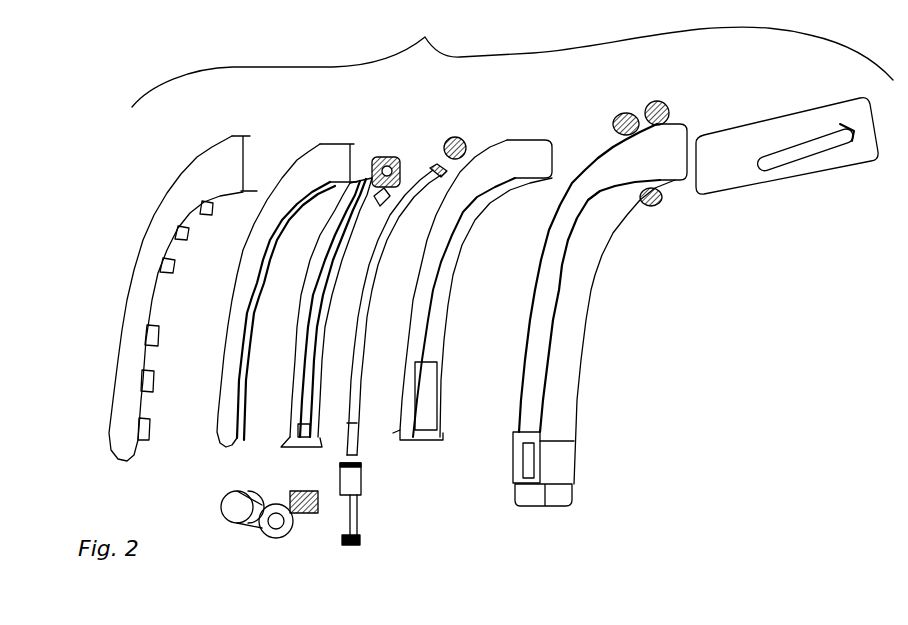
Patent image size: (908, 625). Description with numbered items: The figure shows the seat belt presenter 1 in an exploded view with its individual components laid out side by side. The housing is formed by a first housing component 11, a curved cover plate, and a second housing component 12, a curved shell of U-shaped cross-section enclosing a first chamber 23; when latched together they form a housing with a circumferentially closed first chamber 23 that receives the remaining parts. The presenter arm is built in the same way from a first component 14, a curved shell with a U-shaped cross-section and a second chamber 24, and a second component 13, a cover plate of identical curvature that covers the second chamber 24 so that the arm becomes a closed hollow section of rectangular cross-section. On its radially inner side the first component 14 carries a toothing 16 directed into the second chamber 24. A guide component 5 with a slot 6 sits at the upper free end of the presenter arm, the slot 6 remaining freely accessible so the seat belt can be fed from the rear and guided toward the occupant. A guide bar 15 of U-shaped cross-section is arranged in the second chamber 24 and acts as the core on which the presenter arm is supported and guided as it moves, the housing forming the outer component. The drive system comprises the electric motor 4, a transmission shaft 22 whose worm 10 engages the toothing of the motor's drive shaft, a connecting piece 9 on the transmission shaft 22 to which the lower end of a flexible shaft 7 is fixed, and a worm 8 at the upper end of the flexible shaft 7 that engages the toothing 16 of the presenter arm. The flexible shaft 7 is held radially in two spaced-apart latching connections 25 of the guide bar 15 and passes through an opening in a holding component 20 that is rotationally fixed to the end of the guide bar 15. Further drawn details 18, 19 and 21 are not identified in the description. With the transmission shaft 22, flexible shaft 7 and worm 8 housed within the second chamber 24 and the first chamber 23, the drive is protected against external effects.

The seat belt presenter 1 is at (512, 60).
The electric motor 4 is at (250, 520).
The guide component 5 is at (810, 168).
The slot 6 is at (847, 123).
The flexible shaft 7 is at (357, 317).
The worm 8 is at (446, 143).
The connecting piece 9 is at (353, 480).
The worm 10 is at (353, 538).
The first housing component 11 is at (150, 257).
The second housing component 12 is at (580, 287).
The second component 13 is at (236, 310).
The first component 14 is at (453, 277).
The guide bar 15 is at (305, 360).
The toothing 16 is at (517, 170).
The projection 18 is at (622, 112).
The projection 19 is at (660, 100).
The holding component 20 is at (388, 166).
The pin 21 is at (383, 205).
The transmission shaft 22 is at (353, 510).
The first chamber 23 is at (563, 233).
The second chamber 24 is at (440, 245).
The latching connections 25 is at (347, 227).